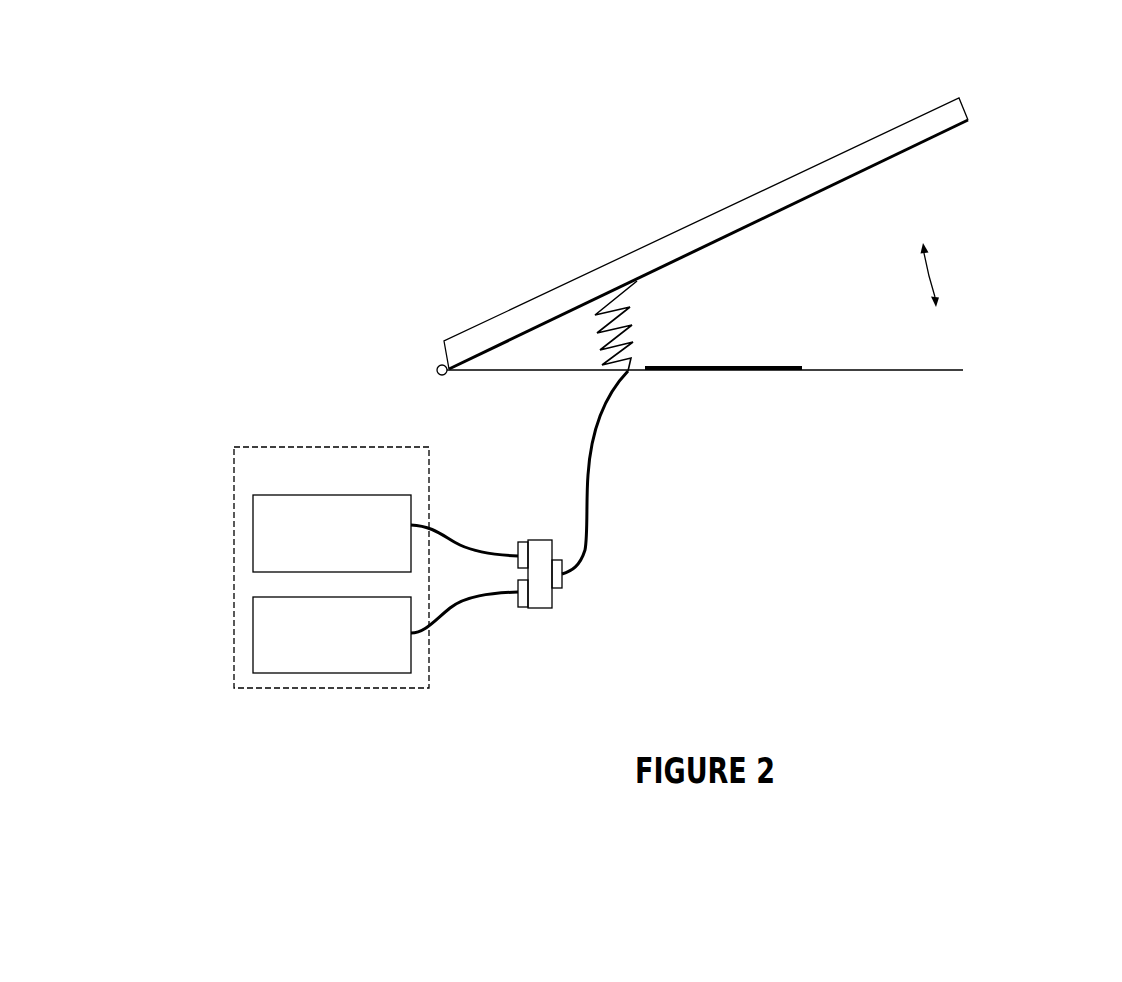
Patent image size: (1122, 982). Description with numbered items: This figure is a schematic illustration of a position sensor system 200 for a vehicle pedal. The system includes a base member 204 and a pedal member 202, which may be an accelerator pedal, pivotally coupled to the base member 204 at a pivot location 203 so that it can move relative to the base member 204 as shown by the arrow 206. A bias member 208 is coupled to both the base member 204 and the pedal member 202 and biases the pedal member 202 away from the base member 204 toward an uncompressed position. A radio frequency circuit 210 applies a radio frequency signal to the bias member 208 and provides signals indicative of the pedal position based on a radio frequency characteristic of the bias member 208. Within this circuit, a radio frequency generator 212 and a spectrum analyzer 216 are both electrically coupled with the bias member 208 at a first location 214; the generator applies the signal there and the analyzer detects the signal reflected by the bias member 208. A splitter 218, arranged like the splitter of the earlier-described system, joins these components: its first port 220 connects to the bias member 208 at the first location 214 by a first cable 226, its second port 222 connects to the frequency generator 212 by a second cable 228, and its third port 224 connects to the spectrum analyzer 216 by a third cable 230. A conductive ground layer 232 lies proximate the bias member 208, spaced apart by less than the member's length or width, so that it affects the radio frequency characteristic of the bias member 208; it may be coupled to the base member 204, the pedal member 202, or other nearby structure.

The position sensor system 200 is at (497, 129).
The pedal member 202 is at (963, 99).
The pivot location 203 is at (438, 371).
The base member 204 is at (955, 372).
The arrow 206 is at (932, 273).
The bias member 208 is at (634, 335).
The radio frequency circuit 210 is at (291, 567).
The radio frequency generator 212 is at (253, 529).
The first location 214 is at (638, 379).
The spectrum analyzer 216 is at (253, 622).
The splitter 218 is at (543, 572).
The connector output port 220 is at (566, 592).
The connector input port 222 is at (518, 541).
The connector input port 224 is at (515, 607).
The cable 226 is at (591, 519).
The cable 228 is at (443, 528).
The cable 230 is at (442, 628).
The conductive ground layer 232 is at (802, 366).